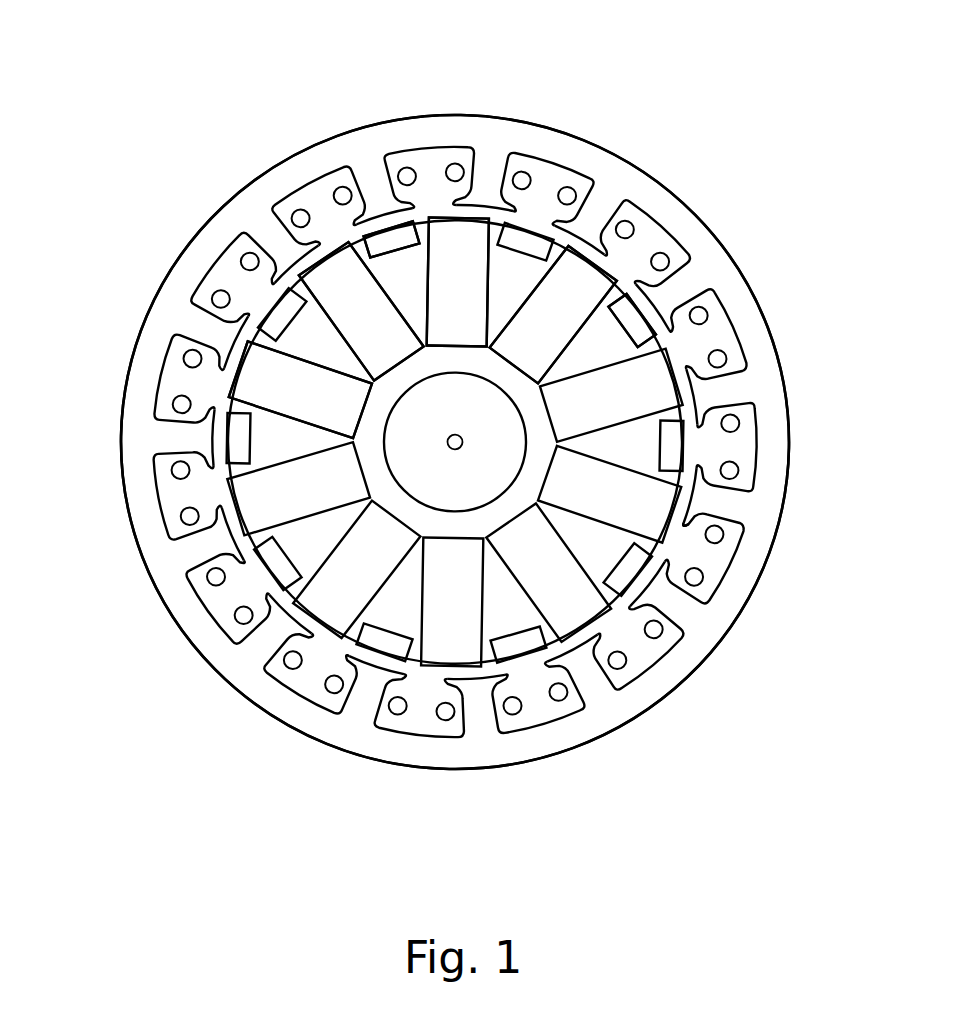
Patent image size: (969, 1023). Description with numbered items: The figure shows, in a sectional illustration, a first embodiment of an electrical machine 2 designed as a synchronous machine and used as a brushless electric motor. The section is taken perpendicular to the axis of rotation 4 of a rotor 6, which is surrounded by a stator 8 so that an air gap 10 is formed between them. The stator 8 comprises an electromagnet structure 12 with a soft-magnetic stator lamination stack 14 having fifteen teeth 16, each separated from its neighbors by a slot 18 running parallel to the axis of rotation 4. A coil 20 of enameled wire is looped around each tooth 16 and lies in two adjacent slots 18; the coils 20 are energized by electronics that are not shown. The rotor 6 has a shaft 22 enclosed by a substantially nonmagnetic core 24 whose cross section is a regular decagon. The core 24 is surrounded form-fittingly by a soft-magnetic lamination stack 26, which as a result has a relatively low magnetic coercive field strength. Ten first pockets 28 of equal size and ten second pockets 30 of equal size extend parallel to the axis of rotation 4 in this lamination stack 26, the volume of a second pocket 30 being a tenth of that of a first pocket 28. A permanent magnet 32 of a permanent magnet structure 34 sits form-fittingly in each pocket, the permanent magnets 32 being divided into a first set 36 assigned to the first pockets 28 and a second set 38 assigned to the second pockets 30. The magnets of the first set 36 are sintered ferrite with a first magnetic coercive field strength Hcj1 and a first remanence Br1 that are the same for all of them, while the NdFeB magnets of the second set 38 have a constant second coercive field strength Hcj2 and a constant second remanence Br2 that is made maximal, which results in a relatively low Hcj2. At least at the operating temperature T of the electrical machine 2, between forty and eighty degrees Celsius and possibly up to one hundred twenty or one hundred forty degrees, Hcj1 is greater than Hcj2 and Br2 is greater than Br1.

The electrical machine 2 is at (760, 100).
The axis of rotation 4 is at (449, 447).
The rotor 6 is at (225, 570).
The stator 8 is at (705, 243).
The air gap 10 is at (487, 243).
The electromagnet structure 12 is at (682, 188).
The stator lamination stack 14 is at (740, 388).
The tooth 16 is at (735, 512).
The slot 18 is at (743, 443).
The coil 20 is at (720, 535).
The shaft 22 is at (471, 488).
The core 24 is at (250, 650).
The lamination stack 26 is at (262, 440).
The first pocket 28 is at (518, 587).
The second pocket 30 is at (655, 645).
The permanent magnet 32 is at (412, 248).
The permanent magnet structure 34 is at (678, 543).
The first set 36 is at (305, 300).
The second set 38 is at (352, 248).
The first remanence Br1 is at (452, 270).
The second remanence Br2 is at (573, 288).
The first magnetic coercive field strength Hcj1 is at (590, 238).
The second magnetic coercive field strength Hcj2 is at (645, 312).
The operating temperature T is at (170, 850).